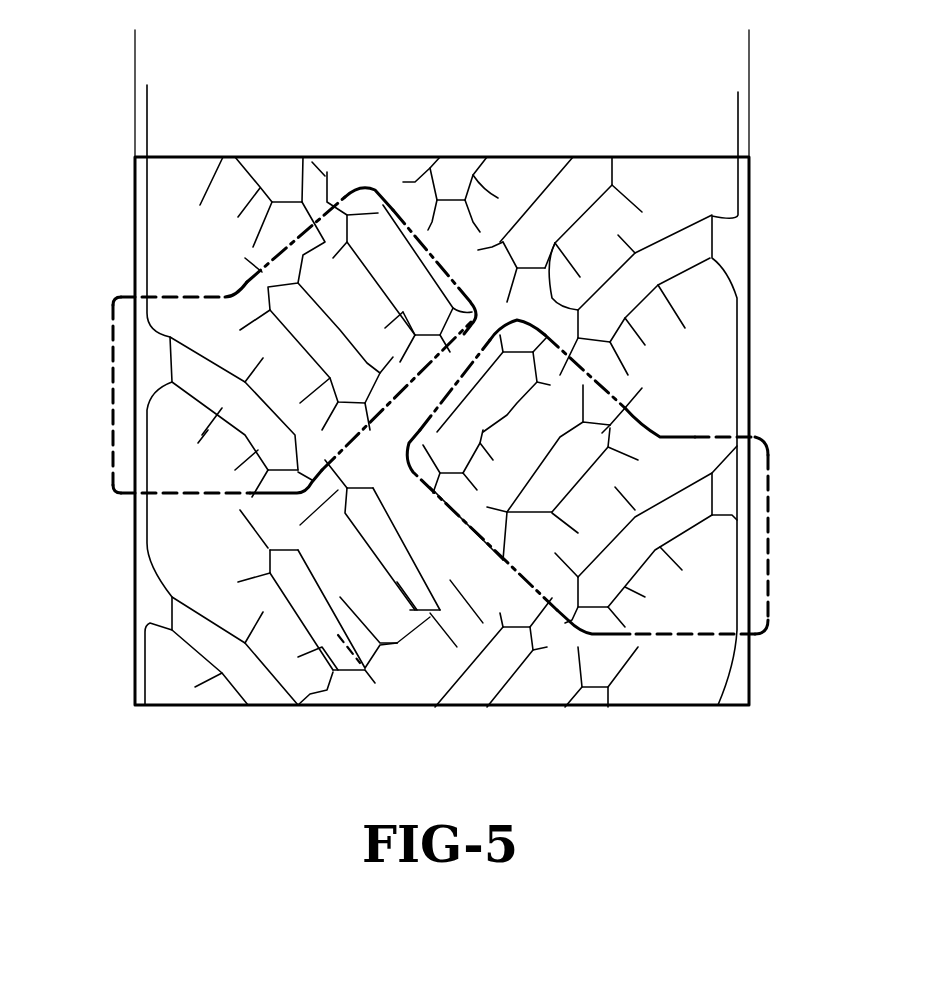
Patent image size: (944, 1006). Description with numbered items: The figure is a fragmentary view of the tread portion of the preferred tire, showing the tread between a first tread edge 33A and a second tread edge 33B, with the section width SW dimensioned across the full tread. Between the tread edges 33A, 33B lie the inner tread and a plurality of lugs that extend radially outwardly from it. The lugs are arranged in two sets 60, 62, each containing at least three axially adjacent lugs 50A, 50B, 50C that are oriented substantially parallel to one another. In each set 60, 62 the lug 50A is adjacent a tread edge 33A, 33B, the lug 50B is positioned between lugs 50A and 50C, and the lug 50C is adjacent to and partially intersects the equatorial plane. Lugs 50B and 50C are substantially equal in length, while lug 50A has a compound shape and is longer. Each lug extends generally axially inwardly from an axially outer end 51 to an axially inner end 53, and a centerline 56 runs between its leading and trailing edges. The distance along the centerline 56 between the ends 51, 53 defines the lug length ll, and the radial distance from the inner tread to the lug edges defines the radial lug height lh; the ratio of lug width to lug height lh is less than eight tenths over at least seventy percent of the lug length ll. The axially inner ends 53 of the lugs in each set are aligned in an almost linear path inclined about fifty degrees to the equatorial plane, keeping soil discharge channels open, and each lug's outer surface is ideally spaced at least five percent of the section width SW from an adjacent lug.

The first tread edge 33A is at (739, 102).
The second tread edge 33B is at (147, 98).
The lug 50A is at (198, 381).
The lug 50B is at (313, 334).
The lug 50C is at (388, 256).
The axially outer end 51 is at (270, 549).
The axially inner end 53 is at (373, 660).
The centerline 56 is at (325, 612).
The set of lugs 60 is at (768, 560).
The set of lugs 62 is at (112, 414).
The section width SW is at (747, 43).
The lug length ll is at (401, 628).
The radial lug height lh is at (520, 580).